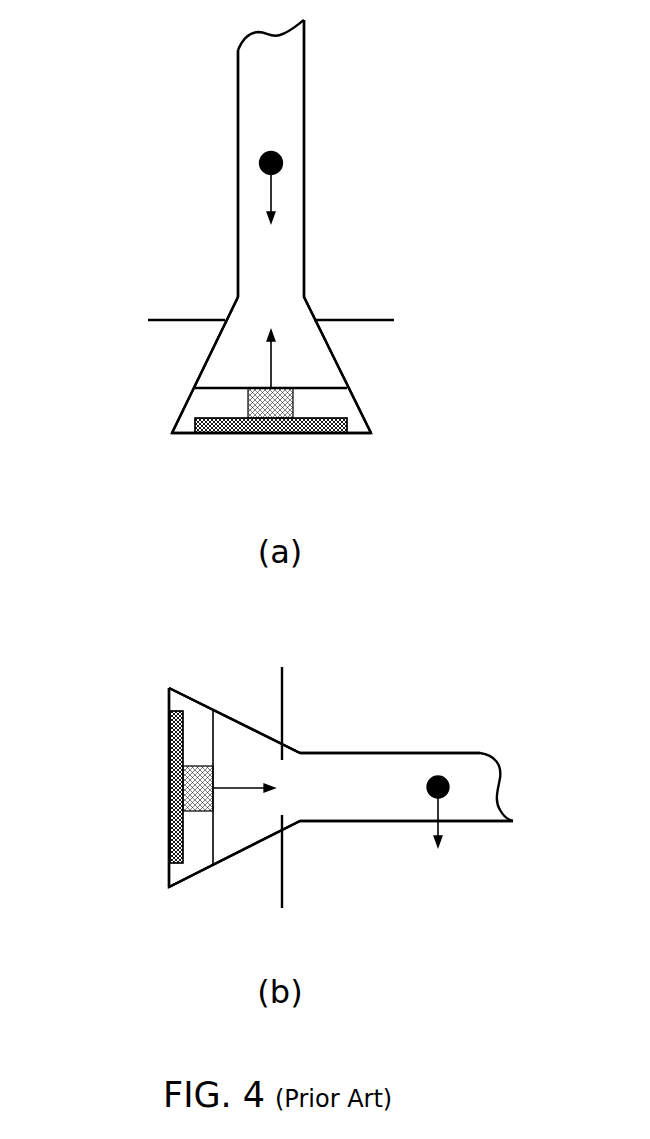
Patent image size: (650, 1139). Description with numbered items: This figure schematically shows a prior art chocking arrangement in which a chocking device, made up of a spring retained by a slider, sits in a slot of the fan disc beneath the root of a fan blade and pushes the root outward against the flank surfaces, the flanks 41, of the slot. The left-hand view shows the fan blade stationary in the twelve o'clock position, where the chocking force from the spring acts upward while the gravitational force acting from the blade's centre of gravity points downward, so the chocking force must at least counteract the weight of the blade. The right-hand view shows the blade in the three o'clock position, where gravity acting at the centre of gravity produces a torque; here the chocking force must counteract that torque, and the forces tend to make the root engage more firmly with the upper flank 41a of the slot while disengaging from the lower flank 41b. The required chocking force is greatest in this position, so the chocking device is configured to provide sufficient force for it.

The flanks 41 is at (206, 356).
The upper flank 41a is at (243, 725).
The lower flank 41b is at (247, 847).